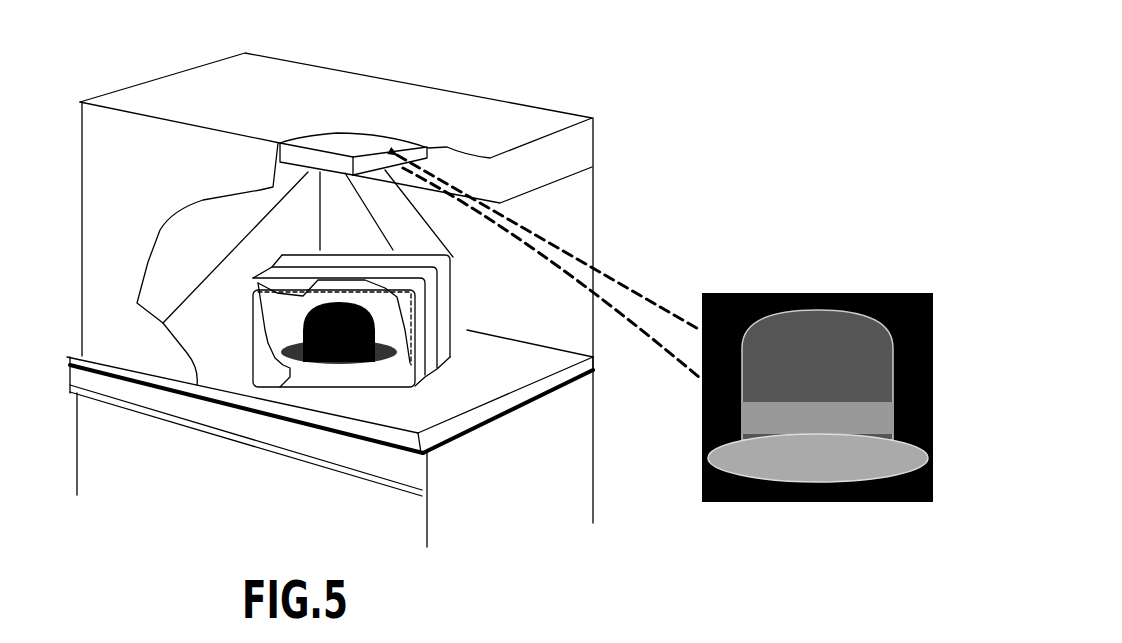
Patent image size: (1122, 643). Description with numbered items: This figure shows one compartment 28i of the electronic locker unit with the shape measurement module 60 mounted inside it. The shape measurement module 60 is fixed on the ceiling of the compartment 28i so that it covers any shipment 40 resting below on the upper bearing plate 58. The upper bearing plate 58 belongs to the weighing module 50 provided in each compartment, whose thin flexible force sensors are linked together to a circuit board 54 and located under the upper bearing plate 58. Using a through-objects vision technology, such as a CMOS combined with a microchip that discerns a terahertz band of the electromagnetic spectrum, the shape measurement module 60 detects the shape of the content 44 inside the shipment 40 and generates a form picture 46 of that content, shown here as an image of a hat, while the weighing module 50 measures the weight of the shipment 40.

The compartment 28i is at (508, 122).
The circuit board 54 is at (333, 147).
The shape measurement module 60 is at (298, 157).
The shipment 40 is at (262, 312).
The content 44 is at (347, 363).
The upper bearing plate 58 is at (503, 360).
The weighing module 50 is at (178, 398).
The form picture 46 is at (772, 502).